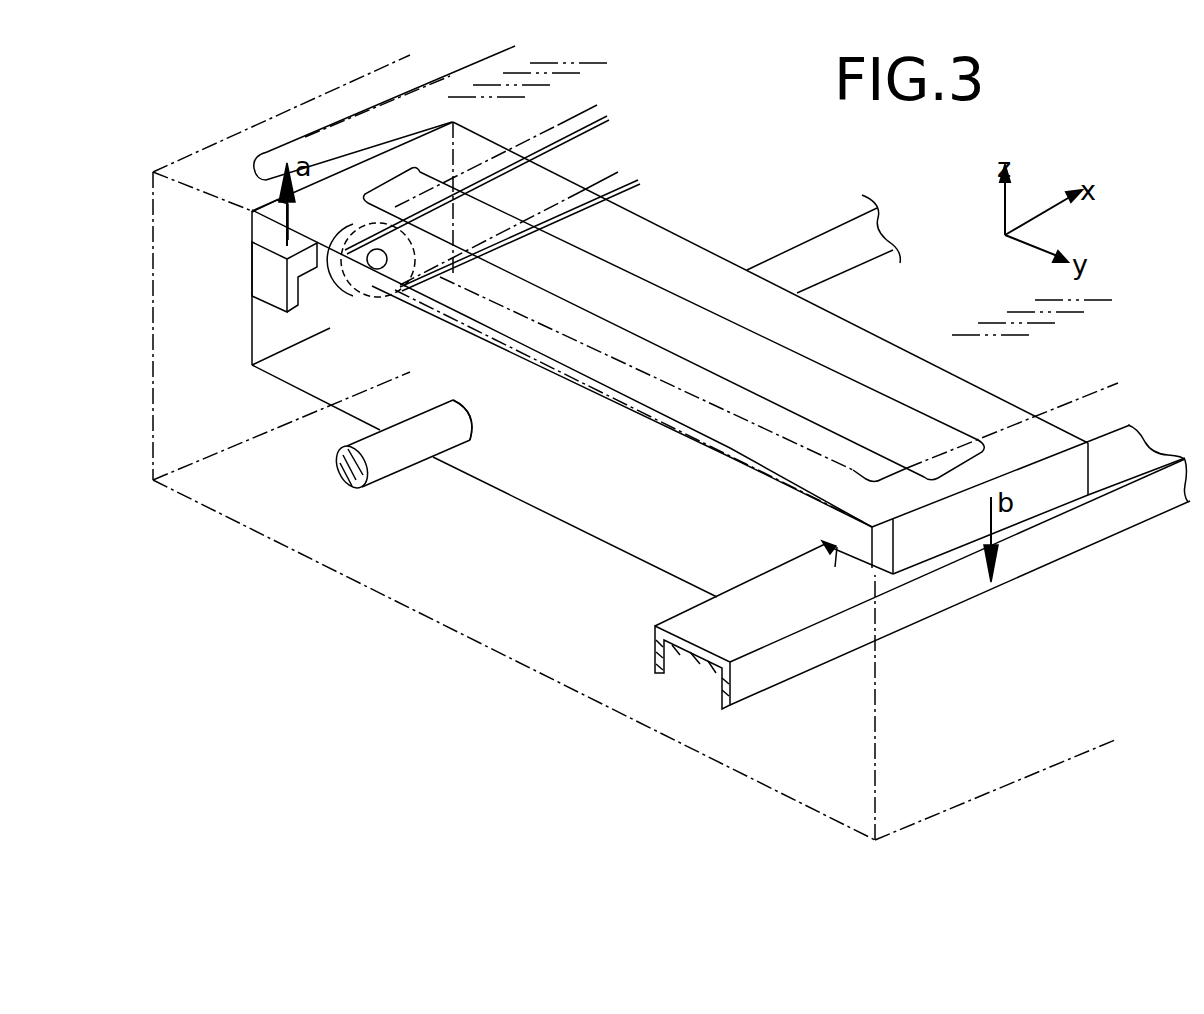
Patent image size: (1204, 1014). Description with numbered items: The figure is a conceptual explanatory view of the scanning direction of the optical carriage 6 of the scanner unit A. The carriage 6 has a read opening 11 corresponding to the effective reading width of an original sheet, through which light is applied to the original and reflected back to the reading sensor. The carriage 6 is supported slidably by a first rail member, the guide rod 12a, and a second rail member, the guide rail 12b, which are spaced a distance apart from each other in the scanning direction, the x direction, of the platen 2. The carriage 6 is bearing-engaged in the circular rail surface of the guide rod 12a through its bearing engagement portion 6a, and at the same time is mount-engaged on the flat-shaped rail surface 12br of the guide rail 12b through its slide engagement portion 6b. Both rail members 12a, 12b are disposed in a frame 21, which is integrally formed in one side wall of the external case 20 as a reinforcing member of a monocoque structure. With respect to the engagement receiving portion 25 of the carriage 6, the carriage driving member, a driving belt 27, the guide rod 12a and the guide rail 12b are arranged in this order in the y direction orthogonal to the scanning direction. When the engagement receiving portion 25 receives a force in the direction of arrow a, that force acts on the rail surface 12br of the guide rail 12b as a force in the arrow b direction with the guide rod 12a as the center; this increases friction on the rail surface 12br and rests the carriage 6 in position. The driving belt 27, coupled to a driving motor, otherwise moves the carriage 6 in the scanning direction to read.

The platen 2 is at (358, 138).
The carriage 6 is at (700, 247).
The bearing engagement portion 6a is at (470, 426).
The slide engagement portion 6b is at (832, 572).
The read opening 11 is at (607, 277).
The first rail member (guide rod) 12a is at (400, 467).
The second rail member (guide rail) 12b is at (922, 610).
The rail surface 12br is at (775, 605).
The external case 20 is at (583, 447).
The frame 21 is at (153, 343).
The engagement receiving portion 25 is at (265, 274).
The carriage driving member (driving belt) 27 is at (557, 140).
The scanner unit A is at (329, 597).